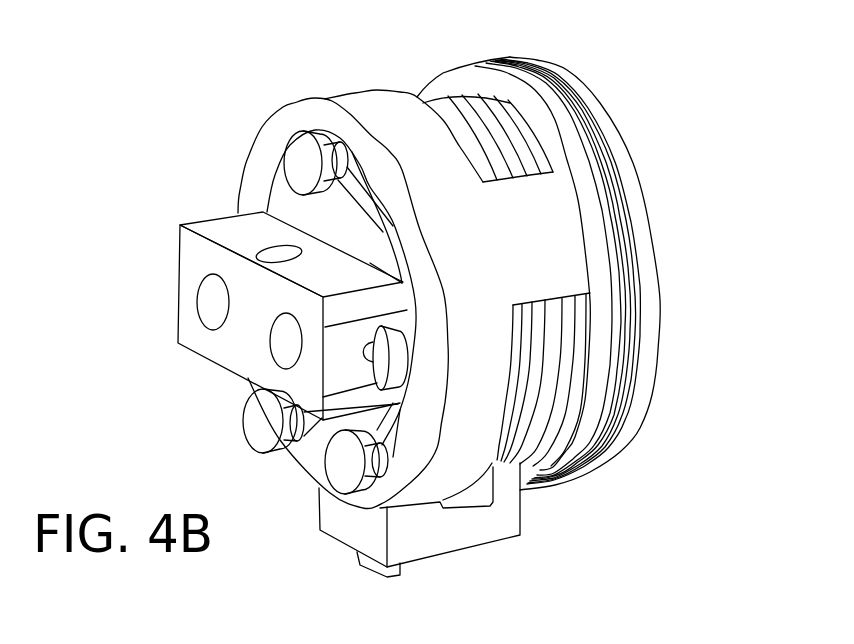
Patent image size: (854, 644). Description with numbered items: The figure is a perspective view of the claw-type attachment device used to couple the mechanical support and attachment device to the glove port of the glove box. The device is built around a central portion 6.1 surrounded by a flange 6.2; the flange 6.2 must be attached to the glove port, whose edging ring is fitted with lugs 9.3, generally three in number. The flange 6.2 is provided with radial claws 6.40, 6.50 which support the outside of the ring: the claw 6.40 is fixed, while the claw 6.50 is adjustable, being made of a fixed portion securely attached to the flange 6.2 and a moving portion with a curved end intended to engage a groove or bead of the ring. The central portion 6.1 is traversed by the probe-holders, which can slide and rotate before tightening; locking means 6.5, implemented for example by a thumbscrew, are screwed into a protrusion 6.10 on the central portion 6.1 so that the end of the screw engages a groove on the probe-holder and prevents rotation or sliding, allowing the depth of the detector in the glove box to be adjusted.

The central portion 6.1 is at (238, 255).
The flange 6.2 is at (383, 106).
The locking means 6.5 is at (372, 361).
The protrusion 6.10 is at (347, 344).
The fixed claw 6.40 is at (543, 230).
The adjustable claw 6.50 is at (483, 523).
The lugs 9.3 is at (495, 135).